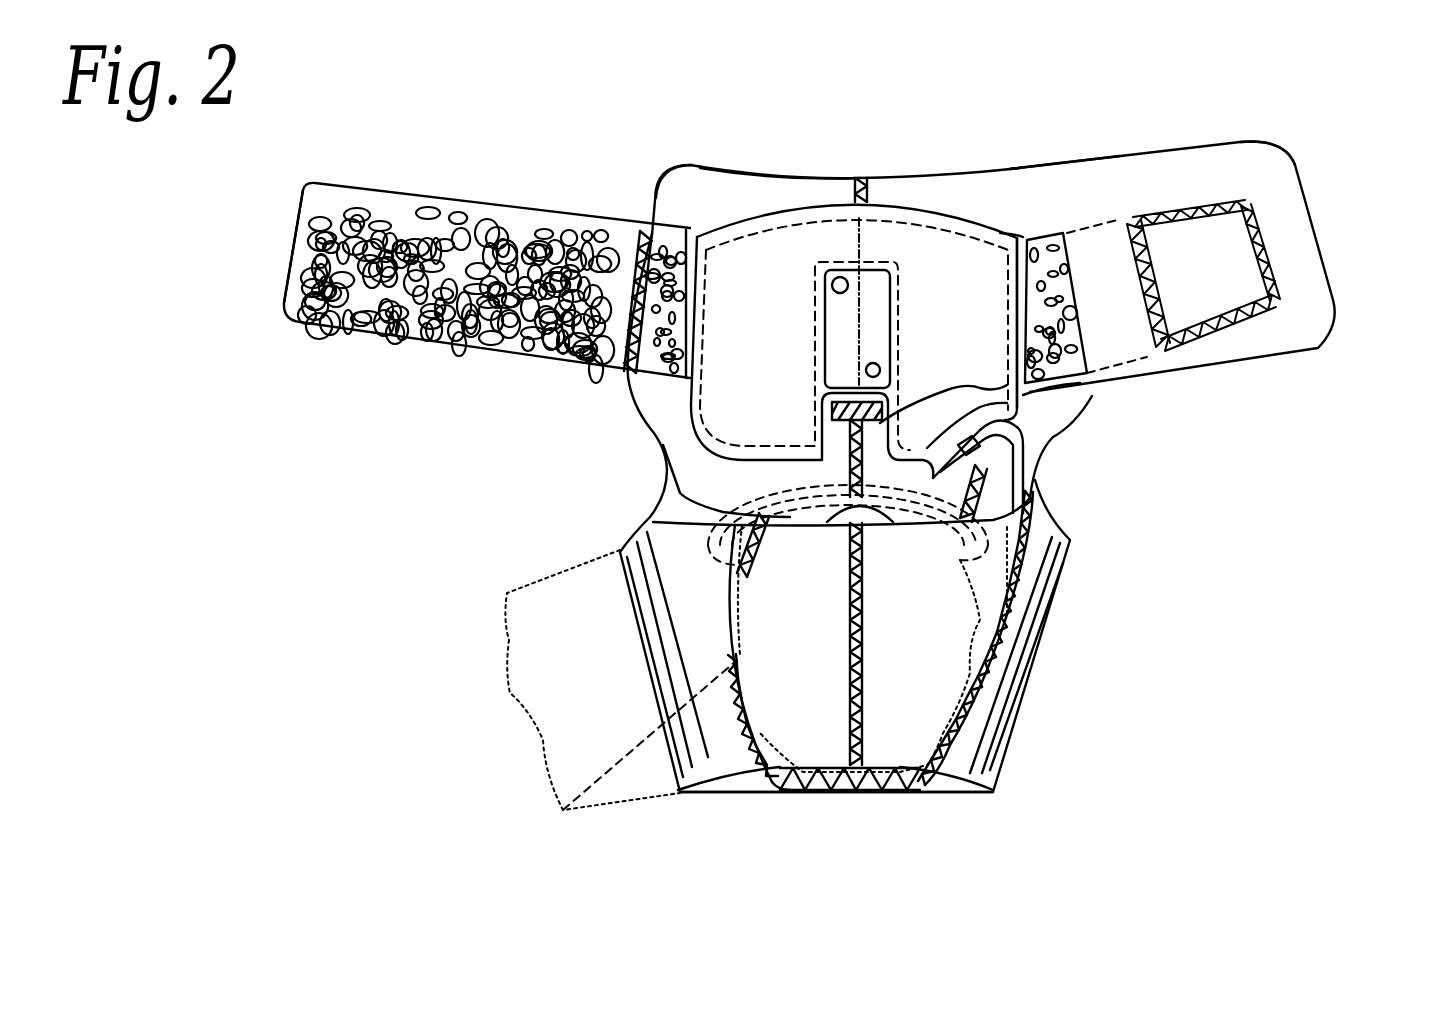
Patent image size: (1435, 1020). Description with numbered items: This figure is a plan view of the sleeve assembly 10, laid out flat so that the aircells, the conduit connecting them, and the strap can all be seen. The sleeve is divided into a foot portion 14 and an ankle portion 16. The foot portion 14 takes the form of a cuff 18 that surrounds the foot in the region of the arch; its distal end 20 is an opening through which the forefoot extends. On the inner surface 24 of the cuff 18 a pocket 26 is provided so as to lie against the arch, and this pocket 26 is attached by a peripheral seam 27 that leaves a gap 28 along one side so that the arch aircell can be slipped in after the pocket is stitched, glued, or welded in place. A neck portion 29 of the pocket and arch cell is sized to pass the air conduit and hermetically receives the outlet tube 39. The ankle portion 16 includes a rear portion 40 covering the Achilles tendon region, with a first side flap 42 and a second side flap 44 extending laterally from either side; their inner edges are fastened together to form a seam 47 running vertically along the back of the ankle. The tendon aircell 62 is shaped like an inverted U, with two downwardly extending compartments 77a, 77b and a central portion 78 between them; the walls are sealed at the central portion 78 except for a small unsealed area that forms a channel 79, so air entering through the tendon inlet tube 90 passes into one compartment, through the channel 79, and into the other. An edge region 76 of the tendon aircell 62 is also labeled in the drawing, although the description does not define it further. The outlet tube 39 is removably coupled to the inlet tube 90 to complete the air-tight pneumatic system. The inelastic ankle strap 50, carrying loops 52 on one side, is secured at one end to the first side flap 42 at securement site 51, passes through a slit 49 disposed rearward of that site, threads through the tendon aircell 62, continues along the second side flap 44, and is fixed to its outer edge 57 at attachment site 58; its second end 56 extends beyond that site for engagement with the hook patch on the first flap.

The sleeve assembly 10 is at (497, 841).
The foot portion 14 is at (1207, 517).
The ankle portion 16 is at (1350, 145).
The cuff 18 is at (997, 723).
The distal end 20 is at (938, 785).
The inner surface 24 is at (562, 719).
The pocket 26 is at (957, 673).
The peripheral seam 27 is at (747, 537).
The gap 28 is at (593, 820).
The neck portion 29 is at (997, 487).
The outlet tube 39 is at (1022, 442).
The rear portion 40 is at (1012, 183).
The first side flap 42 is at (1235, 165).
The second side flap 44 is at (733, 180).
The seam 47 is at (868, 178).
The slit 49 is at (1050, 240).
The ankle strap 50 is at (520, 345).
The securement site 51 is at (1130, 210).
The loops 52 is at (405, 312).
The second end 56 is at (303, 210).
The outer edge 57 is at (662, 190).
The attachment site 58 is at (625, 365).
The tendon aircell 62 is at (805, 240).
The pad edge 76 is at (1010, 230).
The compartment 77a is at (935, 313).
The compartment 77b is at (735, 333).
The central portion 78 is at (875, 305).
The channel 79 is at (862, 237).
The tendon inlet tube 90 is at (1020, 432).